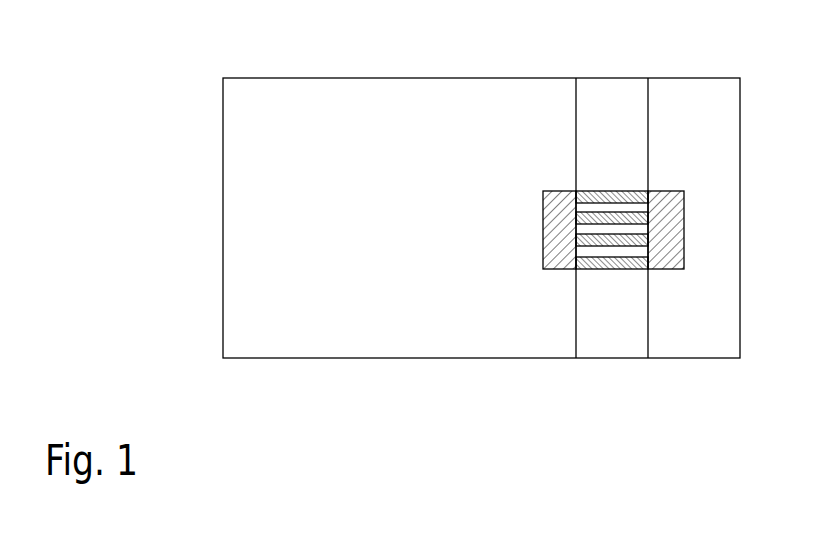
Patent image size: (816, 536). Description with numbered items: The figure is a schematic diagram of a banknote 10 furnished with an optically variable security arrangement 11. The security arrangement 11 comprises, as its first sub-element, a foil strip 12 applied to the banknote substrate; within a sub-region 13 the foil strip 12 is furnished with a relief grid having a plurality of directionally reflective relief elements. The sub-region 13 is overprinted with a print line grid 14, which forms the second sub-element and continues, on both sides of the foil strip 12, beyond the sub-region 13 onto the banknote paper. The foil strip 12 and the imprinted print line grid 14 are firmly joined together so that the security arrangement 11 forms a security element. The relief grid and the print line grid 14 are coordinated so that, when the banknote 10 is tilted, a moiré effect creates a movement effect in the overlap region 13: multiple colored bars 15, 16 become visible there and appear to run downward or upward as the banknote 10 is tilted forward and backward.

The banknote 10 is at (190, 89).
The optically variable security arrangement 11 is at (496, 166).
The foil strip 12 is at (613, 92).
The sub-region 13 is at (633, 191).
The print line grid 14 is at (556, 248).
The colored bar 15 is at (596, 248).
The colored bar 16 is at (627, 249).